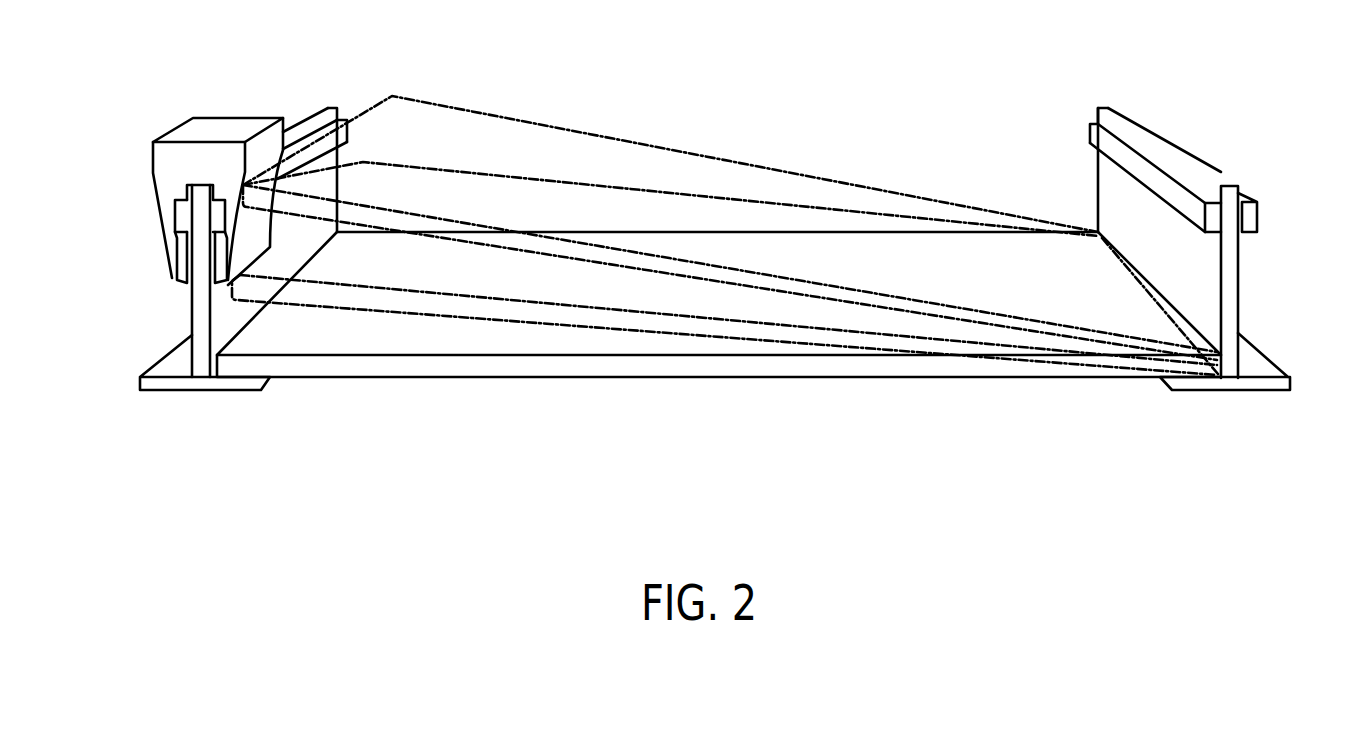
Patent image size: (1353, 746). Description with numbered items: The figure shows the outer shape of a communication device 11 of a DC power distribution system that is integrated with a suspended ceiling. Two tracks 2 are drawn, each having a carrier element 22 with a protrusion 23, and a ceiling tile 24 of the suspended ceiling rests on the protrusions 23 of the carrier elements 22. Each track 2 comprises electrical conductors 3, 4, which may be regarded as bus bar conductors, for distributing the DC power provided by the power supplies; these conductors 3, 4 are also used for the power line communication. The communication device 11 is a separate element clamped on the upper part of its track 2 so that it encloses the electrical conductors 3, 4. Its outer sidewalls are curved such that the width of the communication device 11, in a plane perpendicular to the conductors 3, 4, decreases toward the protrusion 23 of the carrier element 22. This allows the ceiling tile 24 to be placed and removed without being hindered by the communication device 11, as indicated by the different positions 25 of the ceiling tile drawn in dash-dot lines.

The track 2 is at (717, 320).
The electrical conductor 3 is at (178, 212).
The electrical conductor 4 is at (222, 216).
The communication device 11 is at (200, 121).
The carrier element 22 is at (190, 325).
The protrusion 23 is at (282, 402).
The ceiling tile 24 is at (687, 379).
The positions of the ceiling tile 25 is at (673, 108).